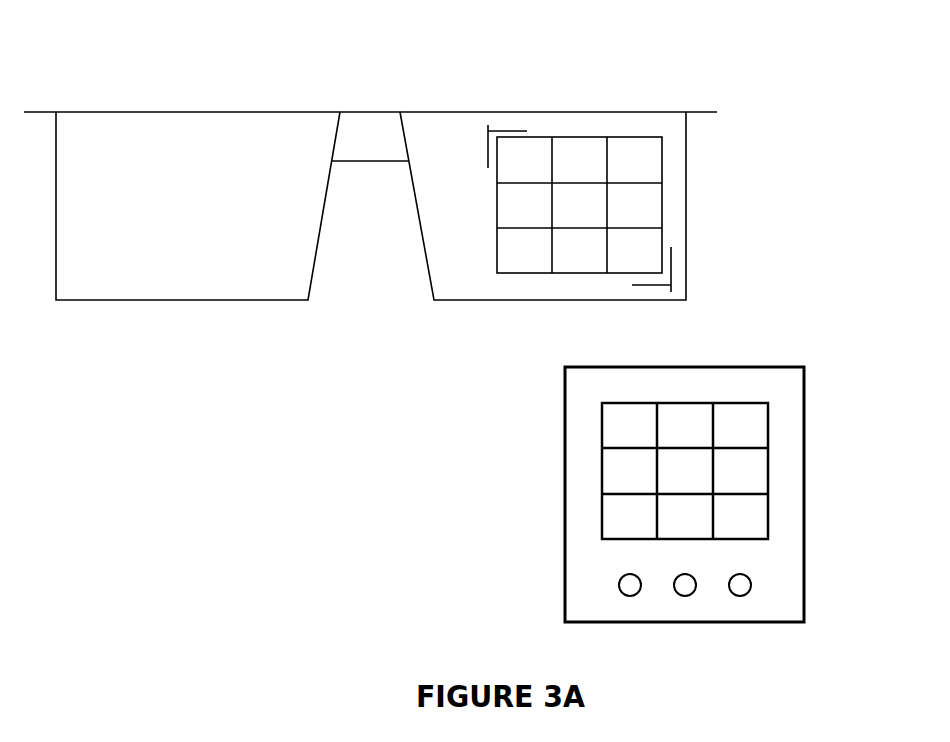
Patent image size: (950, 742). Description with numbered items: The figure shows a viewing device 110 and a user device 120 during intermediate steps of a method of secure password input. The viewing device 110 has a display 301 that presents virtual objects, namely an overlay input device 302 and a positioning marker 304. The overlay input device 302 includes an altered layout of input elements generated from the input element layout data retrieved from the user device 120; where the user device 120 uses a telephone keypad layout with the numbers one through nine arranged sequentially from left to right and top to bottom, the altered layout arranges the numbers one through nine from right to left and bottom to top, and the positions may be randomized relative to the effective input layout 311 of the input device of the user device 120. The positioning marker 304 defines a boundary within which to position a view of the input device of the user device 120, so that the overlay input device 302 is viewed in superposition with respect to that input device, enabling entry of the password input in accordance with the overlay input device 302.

The viewing device 110 is at (127, 100).
The display 301 is at (417, 118).
The overlay input device 302 is at (676, 175).
The positioning marker 304 is at (687, 251).
The user device 120 is at (791, 353).
The effective input layout 311 is at (783, 441).